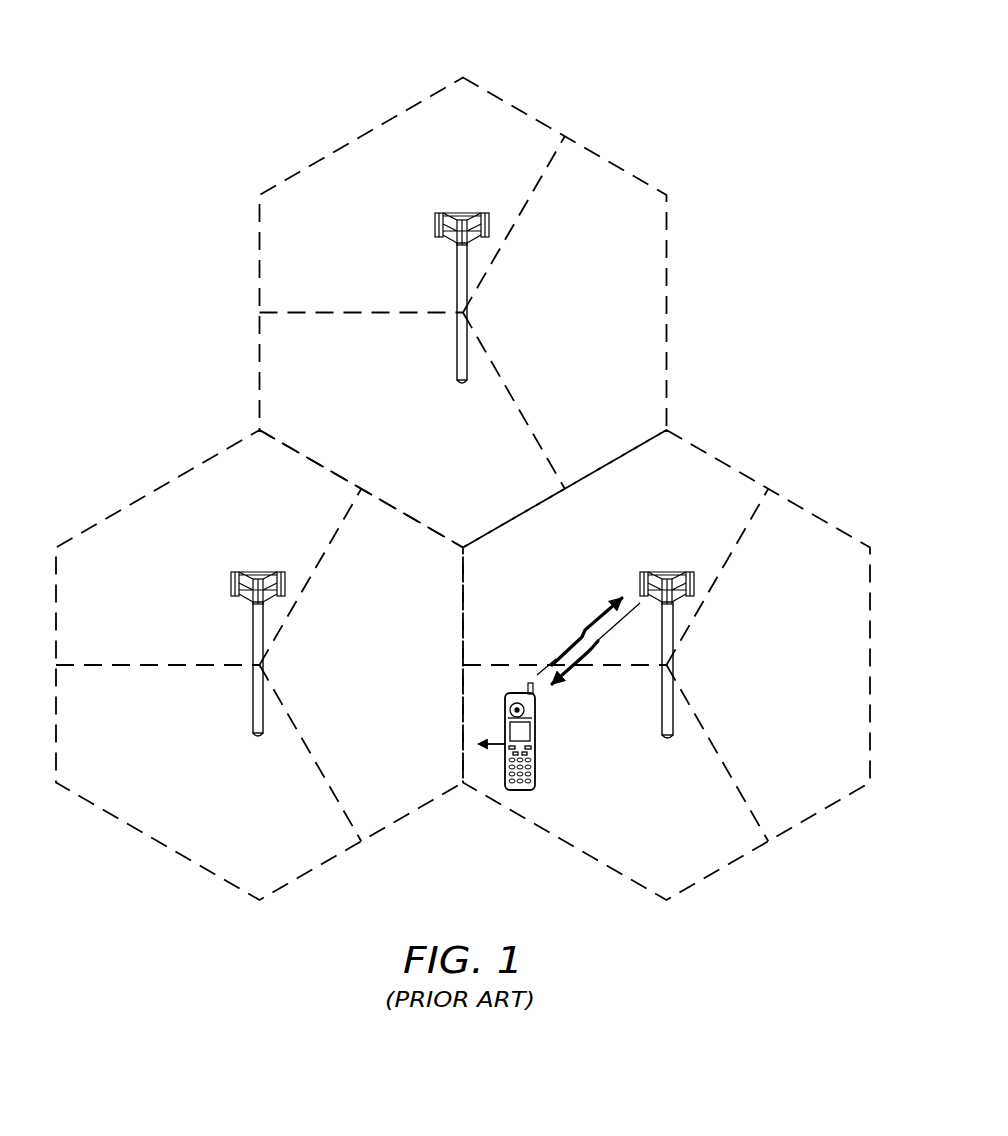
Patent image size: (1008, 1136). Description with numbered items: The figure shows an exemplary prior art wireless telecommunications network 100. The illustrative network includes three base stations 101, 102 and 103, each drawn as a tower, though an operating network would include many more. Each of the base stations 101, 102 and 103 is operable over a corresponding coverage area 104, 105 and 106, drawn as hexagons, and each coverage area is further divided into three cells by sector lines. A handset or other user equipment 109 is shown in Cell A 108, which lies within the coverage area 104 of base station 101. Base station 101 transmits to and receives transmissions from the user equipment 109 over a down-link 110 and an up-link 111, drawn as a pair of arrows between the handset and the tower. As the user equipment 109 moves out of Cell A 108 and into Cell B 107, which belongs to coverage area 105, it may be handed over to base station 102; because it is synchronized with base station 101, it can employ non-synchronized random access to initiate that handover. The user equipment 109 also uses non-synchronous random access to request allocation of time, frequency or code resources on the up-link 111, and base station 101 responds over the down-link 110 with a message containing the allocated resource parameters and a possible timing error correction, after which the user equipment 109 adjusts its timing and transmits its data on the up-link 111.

The wireless telecommunications network 100 is at (658, 80).
The base station 101 is at (673, 665).
The base station 102 is at (253, 703).
The base station 103 is at (457, 345).
The coverage area 104 is at (808, 822).
The coverage area 105 is at (155, 843).
The coverage area 106 is at (666, 311).
The Cell B 107 is at (414, 781).
The Cell A 108 is at (674, 851).
The user equipment 109 is at (535, 757).
The down-link 110 is at (590, 653).
The up-link 111 is at (602, 614).